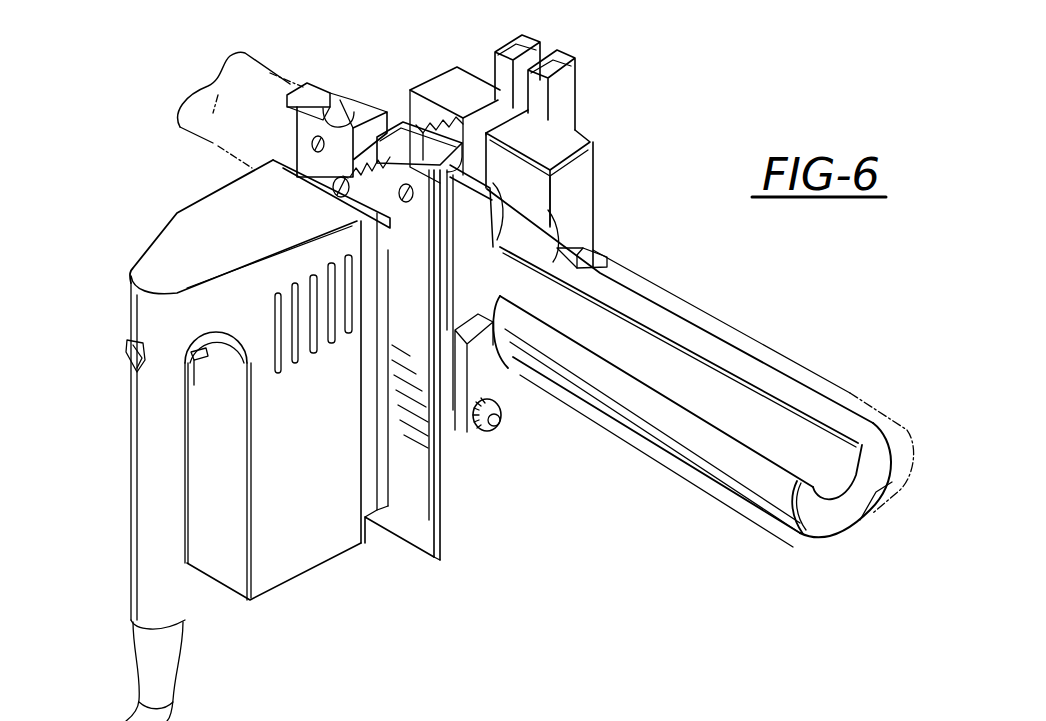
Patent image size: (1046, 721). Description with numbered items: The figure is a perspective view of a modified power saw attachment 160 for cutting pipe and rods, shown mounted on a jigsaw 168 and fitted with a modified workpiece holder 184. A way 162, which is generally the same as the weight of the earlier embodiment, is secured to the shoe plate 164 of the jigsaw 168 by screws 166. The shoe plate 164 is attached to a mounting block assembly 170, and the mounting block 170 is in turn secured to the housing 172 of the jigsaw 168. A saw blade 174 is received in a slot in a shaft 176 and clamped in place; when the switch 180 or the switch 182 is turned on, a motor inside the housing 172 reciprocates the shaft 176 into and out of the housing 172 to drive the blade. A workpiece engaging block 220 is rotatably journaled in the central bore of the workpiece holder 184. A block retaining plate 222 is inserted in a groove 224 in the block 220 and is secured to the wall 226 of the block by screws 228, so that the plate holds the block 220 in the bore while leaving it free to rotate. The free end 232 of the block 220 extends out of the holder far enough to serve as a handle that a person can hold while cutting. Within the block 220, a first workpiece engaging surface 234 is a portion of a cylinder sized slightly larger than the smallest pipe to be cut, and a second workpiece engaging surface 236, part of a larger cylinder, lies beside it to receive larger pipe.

The power saw attachment 160 is at (622, 139).
The way 162 is at (360, 110).
The shoe plate 164 is at (415, 543).
The screws 166 is at (316, 144).
The jigsaw 168 is at (244, 607).
The mounting block assembly 170 is at (406, 491).
The housing 172 is at (328, 551).
The saw blade 174 is at (443, 110).
The shaft 176 is at (323, 182).
The switch 180 is at (127, 358).
The switch 182 is at (196, 367).
The workpiece holder 184 is at (597, 183).
The workpiece engaging block 220 is at (761, 357).
The block retaining plate 222 is at (548, 386).
The groove 224 is at (578, 240).
The wall 226 is at (580, 193).
The screws 228 is at (498, 426).
The free end 232 is at (818, 516).
The first workpiece engaging surface 234 is at (772, 448).
The second workpiece engaging surface 236 is at (818, 404).